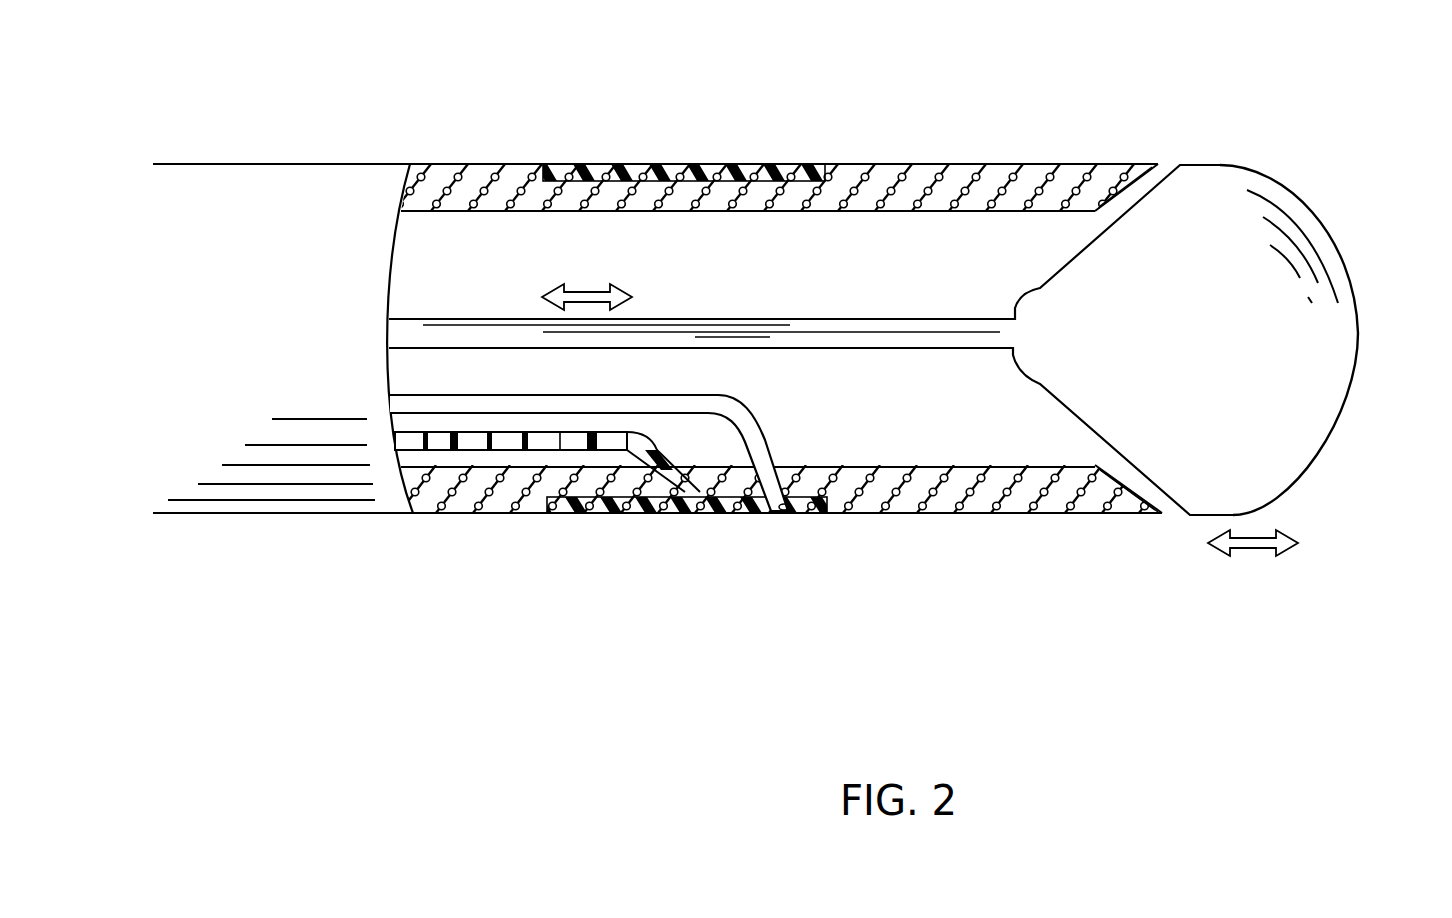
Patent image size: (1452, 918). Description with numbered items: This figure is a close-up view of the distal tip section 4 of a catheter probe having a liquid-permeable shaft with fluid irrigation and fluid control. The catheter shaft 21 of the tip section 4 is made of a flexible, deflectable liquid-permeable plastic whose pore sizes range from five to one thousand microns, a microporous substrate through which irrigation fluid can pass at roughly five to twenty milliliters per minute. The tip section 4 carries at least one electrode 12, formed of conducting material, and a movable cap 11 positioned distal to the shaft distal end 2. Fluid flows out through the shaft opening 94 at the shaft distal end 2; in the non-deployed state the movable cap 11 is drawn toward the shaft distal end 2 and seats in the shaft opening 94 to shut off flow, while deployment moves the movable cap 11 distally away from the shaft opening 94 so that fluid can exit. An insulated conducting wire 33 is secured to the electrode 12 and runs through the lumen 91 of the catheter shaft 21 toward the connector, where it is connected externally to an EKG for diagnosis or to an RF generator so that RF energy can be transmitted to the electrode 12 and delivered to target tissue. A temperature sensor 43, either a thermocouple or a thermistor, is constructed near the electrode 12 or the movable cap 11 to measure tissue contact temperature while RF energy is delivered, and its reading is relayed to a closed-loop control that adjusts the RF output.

The shaft distal end 2 is at (1140, 520).
The tip section 4 is at (277, 164).
The movable cap 11 is at (1297, 180).
The electrode 12 is at (730, 164).
The catheter shaft 21 is at (488, 164).
The insulated conducting wire 33 is at (535, 451).
The temperature sensor 43 is at (785, 525).
The lumen 91 is at (814, 273).
The shaft opening 94 is at (1178, 157).